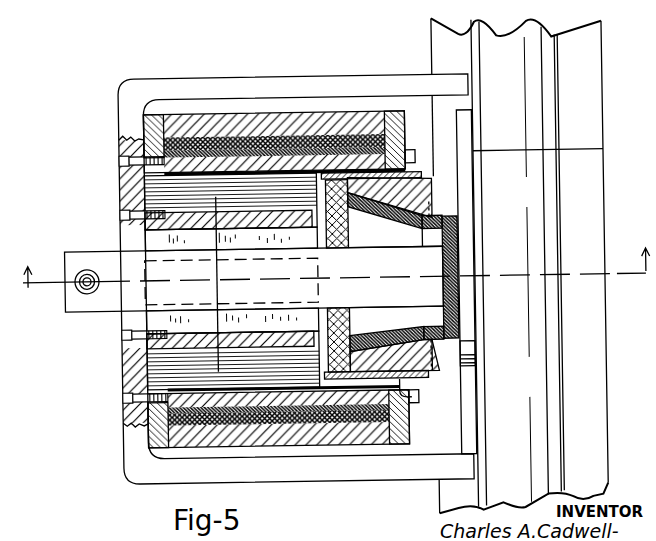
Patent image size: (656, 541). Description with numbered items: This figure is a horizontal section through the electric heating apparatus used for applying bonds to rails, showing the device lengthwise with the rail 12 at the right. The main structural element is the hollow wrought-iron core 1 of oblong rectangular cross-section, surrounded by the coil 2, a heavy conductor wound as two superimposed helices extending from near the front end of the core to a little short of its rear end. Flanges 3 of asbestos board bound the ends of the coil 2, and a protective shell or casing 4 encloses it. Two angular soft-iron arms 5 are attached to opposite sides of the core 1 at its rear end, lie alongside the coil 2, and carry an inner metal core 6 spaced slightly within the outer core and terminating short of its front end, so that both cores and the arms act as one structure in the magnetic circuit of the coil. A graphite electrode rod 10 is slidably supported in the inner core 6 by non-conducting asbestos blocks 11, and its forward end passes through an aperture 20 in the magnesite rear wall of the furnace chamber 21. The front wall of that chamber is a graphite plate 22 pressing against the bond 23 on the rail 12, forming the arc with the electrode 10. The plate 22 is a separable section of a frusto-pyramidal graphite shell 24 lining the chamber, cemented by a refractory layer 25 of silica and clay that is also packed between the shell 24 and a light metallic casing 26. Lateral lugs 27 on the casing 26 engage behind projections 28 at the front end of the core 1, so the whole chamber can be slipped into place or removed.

The hollow metal core 1 is at (297, 160).
The coil 2 is at (196, 132).
The flanges 3 is at (146, 124).
The protective shell or casing 4 is at (365, 488).
The angular arms 5 is at (237, 78).
The inner metal core 6 is at (215, 200).
The electrode rod or bar 10 is at (82, 300).
The blocks 11 is at (146, 235).
The rail 12 is at (566, 409).
The aperture 20 is at (343, 307).
The heat-conserving or furnace chamber 21 is at (396, 338).
The graphite block or plate 22 is at (458, 302).
The bond 23 is at (470, 321).
The shell 24 is at (395, 219).
The layer of refractory material 25 is at (431, 197).
The metallic casing 26 is at (350, 150).
The lugs 27 is at (416, 151).
The projections 28 is at (436, 150).